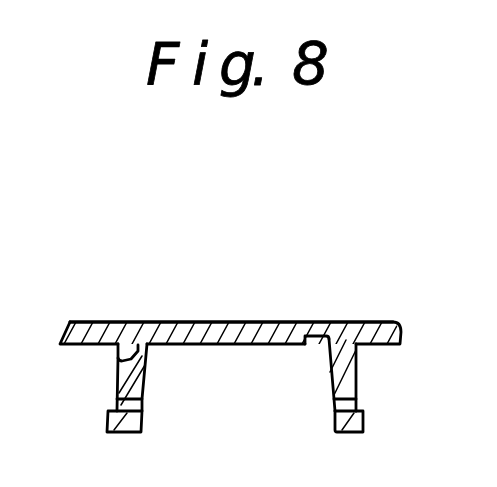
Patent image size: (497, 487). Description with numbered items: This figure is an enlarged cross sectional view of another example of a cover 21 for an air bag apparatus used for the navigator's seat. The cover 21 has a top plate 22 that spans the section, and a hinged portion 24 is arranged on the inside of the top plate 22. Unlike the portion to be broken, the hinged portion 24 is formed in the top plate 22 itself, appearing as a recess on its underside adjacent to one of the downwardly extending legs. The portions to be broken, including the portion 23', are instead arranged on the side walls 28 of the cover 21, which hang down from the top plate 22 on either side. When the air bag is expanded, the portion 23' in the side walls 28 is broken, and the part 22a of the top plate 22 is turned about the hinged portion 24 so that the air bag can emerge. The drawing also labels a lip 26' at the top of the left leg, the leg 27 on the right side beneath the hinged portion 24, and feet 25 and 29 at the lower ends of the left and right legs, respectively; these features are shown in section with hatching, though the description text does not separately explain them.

The cover 21 is at (274, 266).
The top plate 22 is at (372, 323).
The part 22a is at (220, 322).
The portion to be broken 23' is at (162, 382).
The hinged portion 24 is at (318, 326).
The left foot projection 25 is at (106, 412).
The lip 26' is at (93, 373).
The right leg 27 is at (317, 344).
The side wall 28 is at (356, 372).
The right foot projection 29 is at (354, 406).